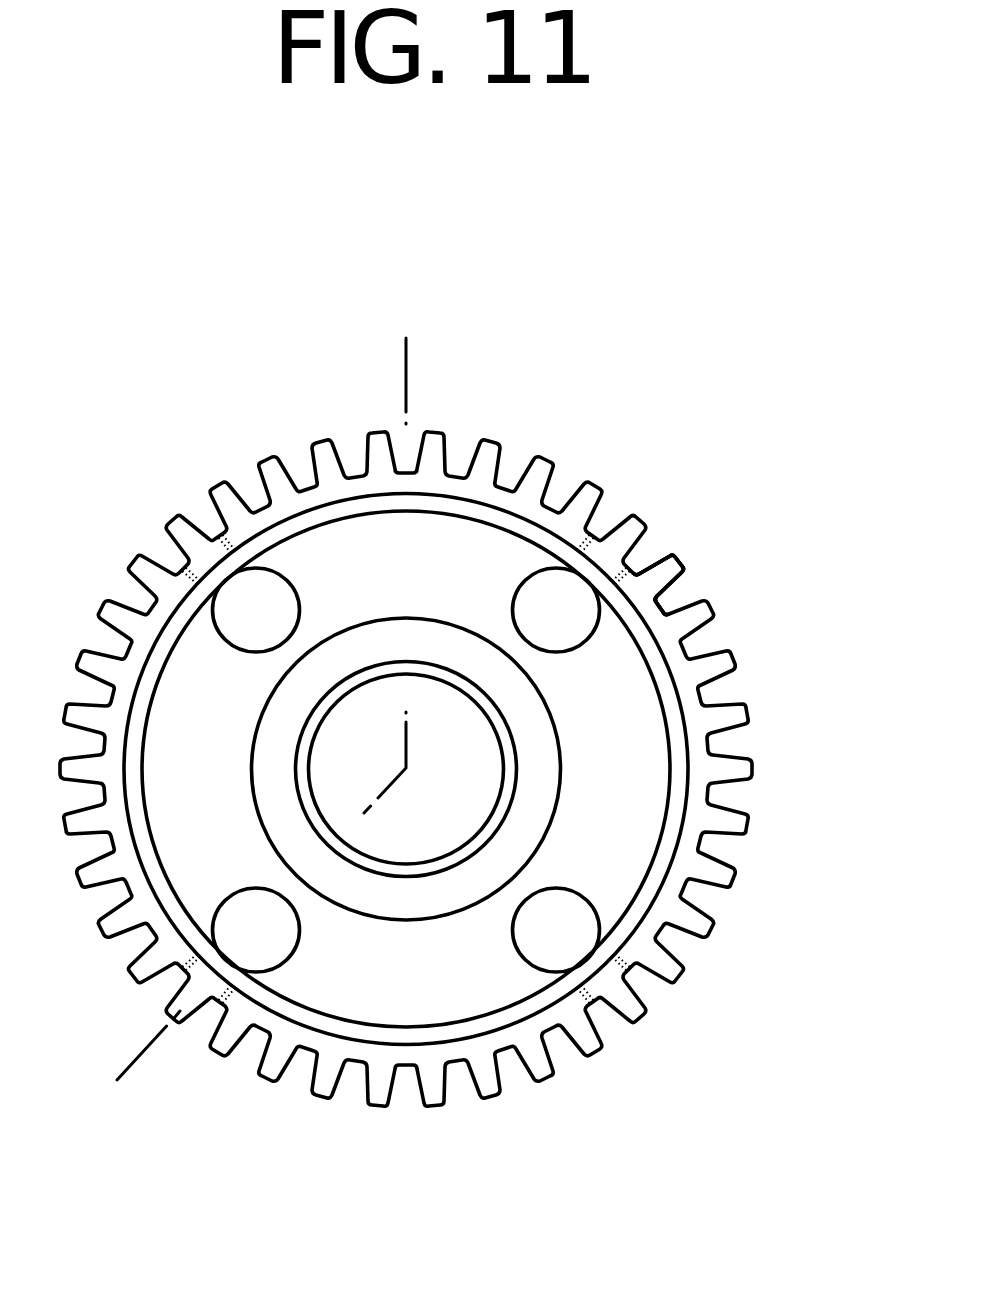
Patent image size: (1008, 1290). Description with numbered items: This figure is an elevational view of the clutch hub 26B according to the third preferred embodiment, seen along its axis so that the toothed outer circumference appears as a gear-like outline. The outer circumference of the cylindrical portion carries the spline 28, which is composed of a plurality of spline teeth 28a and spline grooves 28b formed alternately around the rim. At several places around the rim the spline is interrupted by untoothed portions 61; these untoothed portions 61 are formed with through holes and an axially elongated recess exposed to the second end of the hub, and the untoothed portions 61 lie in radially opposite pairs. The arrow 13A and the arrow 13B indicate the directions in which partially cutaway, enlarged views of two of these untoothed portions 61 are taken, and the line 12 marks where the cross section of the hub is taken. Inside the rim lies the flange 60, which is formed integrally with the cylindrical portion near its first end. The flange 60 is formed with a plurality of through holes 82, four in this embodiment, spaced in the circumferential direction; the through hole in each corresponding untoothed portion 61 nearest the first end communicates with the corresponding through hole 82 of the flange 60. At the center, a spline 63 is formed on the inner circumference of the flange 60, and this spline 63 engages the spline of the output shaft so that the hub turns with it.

The clutch hub 26B is at (290, 426).
The section line 12— 12 is at (418, 367).
The untoothed portions 61 is at (619, 530).
The arrow 13A is at (652, 512).
The arrow 13B is at (646, 1033).
The spline 28 is at (806, 531).
The spline teeth 28a is at (677, 557).
The spline grooves 28b is at (665, 603).
The flange 60 is at (648, 745).
The spline 63 is at (467, 697).
The through holes 82 is at (240, 646).